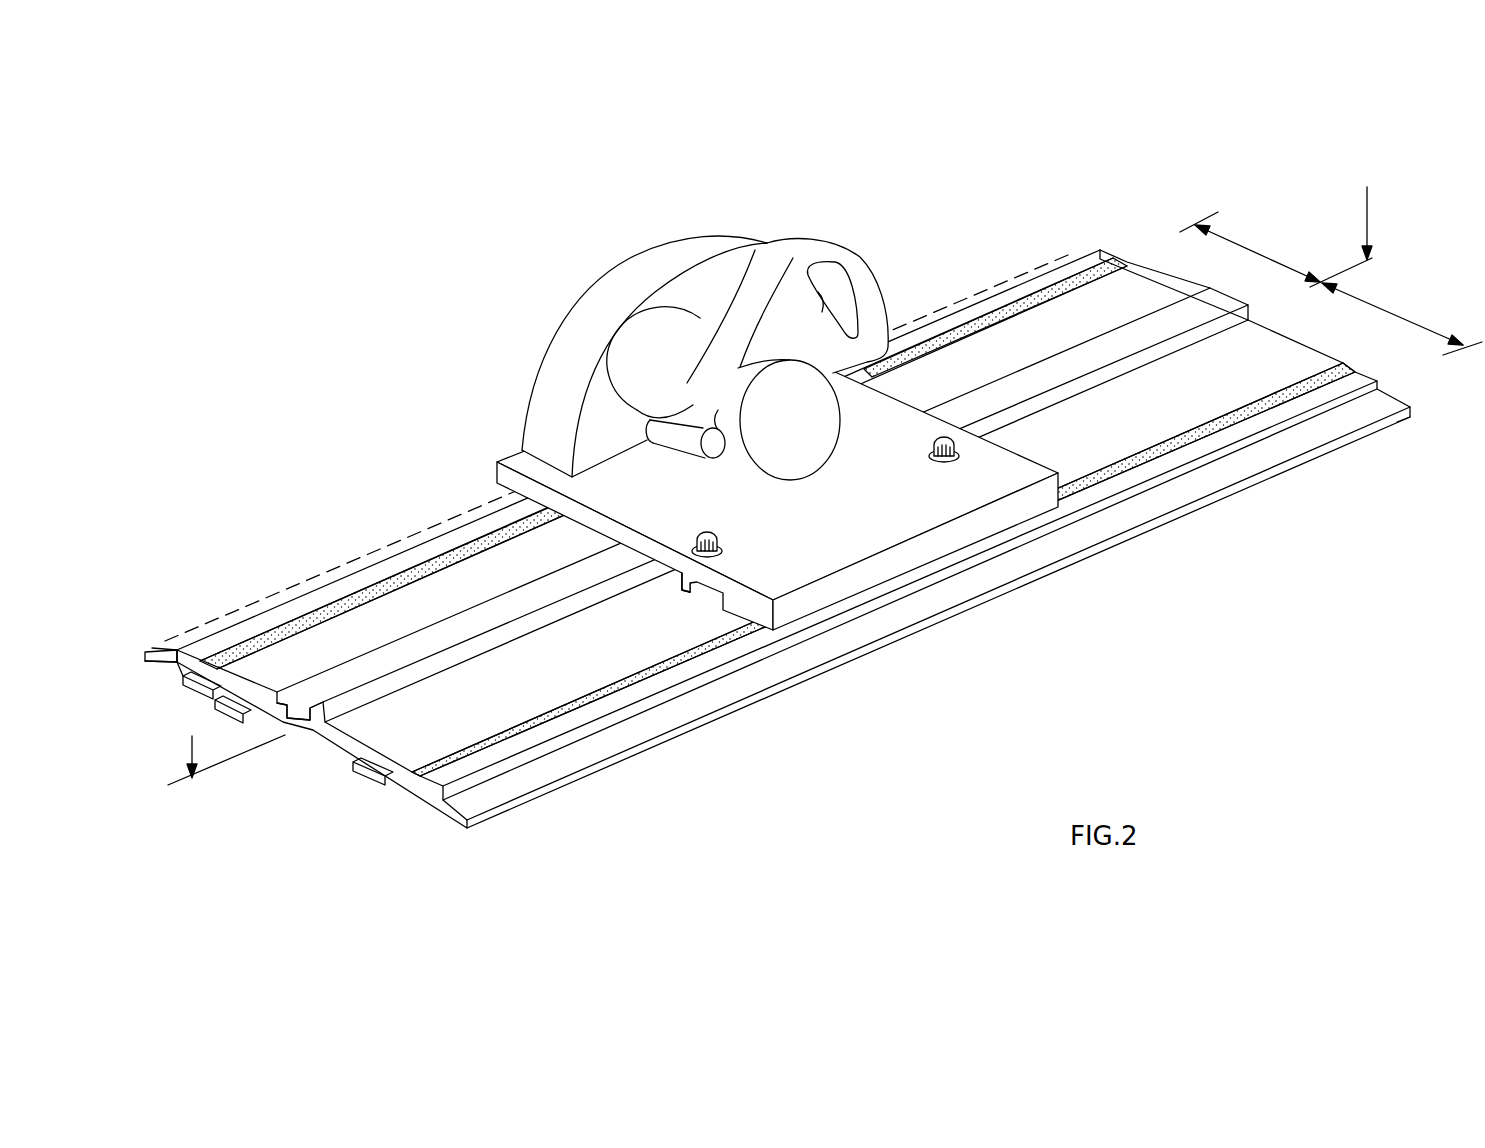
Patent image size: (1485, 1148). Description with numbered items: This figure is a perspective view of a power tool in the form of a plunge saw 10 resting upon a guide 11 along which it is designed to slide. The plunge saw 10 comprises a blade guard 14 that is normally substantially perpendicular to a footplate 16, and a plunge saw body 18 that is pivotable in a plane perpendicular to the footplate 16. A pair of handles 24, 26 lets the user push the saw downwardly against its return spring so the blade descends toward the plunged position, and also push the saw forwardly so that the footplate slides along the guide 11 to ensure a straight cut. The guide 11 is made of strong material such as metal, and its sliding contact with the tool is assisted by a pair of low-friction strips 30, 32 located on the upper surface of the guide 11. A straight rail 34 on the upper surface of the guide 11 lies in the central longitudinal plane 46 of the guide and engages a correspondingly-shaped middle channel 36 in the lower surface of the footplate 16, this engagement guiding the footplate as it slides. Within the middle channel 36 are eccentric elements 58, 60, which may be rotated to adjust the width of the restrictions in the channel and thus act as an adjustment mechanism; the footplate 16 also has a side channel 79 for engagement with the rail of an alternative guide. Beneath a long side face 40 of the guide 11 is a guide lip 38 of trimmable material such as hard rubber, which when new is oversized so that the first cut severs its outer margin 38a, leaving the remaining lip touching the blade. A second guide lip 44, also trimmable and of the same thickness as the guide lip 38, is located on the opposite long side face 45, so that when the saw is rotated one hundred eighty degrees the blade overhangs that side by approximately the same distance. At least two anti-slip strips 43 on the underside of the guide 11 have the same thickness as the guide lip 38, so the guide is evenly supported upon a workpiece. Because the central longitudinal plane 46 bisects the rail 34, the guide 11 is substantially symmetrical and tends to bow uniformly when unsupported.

The plunge saw 10 is at (580, 242).
The guide 11 is at (458, 724).
The blade guard 14 is at (562, 402).
The footplate 16 is at (700, 508).
The plunge saw body 18 is at (796, 440).
The handle 24 is at (863, 287).
The handle 26 is at (690, 435).
The low-friction strip 30 is at (355, 598).
The low-friction strip 32 is at (1237, 417).
The rail 34 is at (490, 612).
The middle channel 36 is at (640, 550).
The guide lip 38 is at (192, 678).
The outer margin 38a is at (158, 650).
The long side face 40 is at (173, 653).
The anti-slip strip 43 is at (228, 700).
The second guide lip 44 is at (537, 777).
The opposite long side face 45 is at (1343, 398).
The central longitudinal plane 46 is at (1364, 212).
The eccentric element 58 is at (735, 540).
The eccentric element 60 is at (940, 475).
The side channel 79 is at (713, 583).